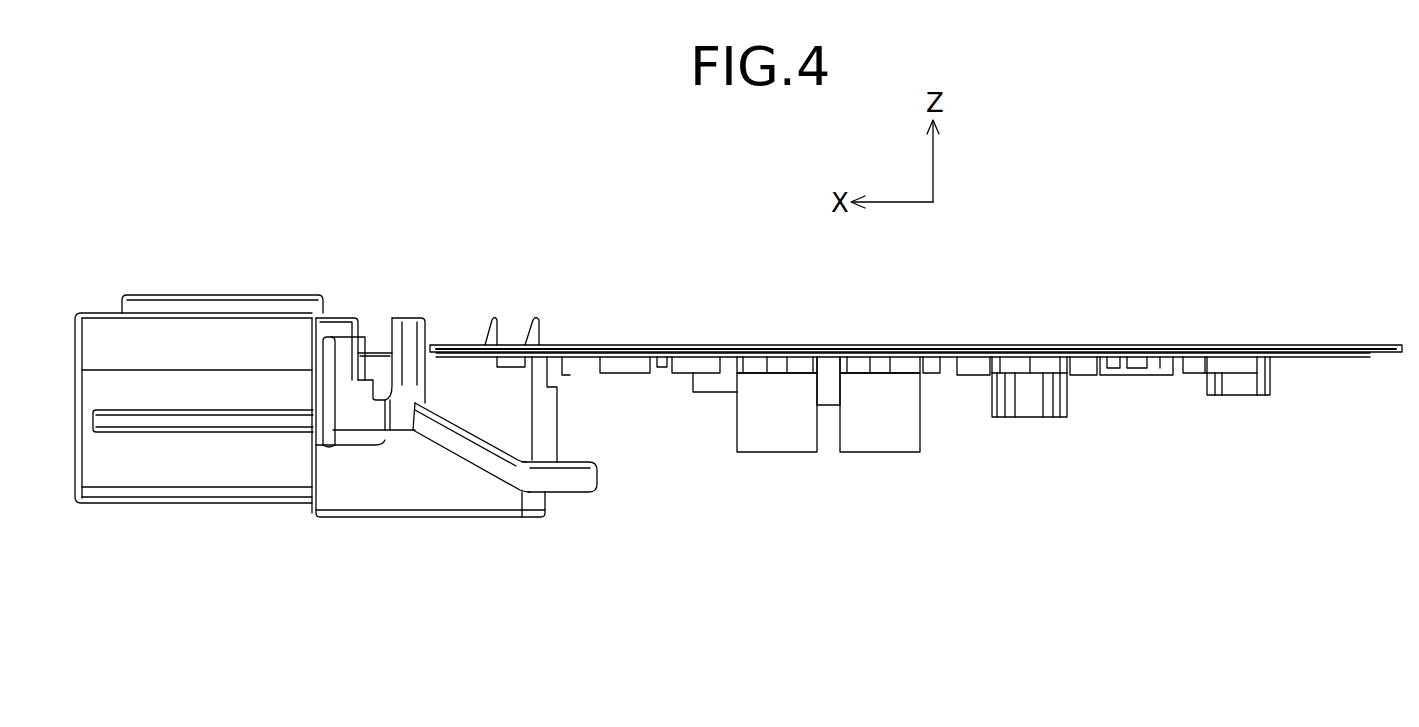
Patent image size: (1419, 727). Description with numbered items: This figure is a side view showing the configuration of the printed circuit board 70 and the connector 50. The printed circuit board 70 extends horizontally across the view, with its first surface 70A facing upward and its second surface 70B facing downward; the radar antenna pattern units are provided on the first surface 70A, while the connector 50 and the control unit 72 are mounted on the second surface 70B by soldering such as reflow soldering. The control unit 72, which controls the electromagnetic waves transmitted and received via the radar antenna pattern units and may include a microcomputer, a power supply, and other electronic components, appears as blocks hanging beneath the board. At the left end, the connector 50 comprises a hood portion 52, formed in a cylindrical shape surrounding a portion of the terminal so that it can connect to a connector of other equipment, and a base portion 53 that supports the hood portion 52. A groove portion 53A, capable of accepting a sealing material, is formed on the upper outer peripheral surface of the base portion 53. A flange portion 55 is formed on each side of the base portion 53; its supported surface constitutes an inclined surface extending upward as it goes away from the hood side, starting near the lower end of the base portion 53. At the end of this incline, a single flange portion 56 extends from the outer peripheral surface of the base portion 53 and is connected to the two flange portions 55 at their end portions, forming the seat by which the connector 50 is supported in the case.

The connector 50 is at (106, 311).
The hood portion 52 is at (197, 465).
The base portion 53 is at (410, 518).
The groove portion 53A is at (378, 352).
The flange portion 55 is at (477, 452).
The flange portion 56 is at (573, 480).
The printed circuit board 70 is at (1350, 344).
The first surface 70A is at (1253, 344).
The second surface 70B is at (1317, 358).
The control unit 72 is at (772, 442).